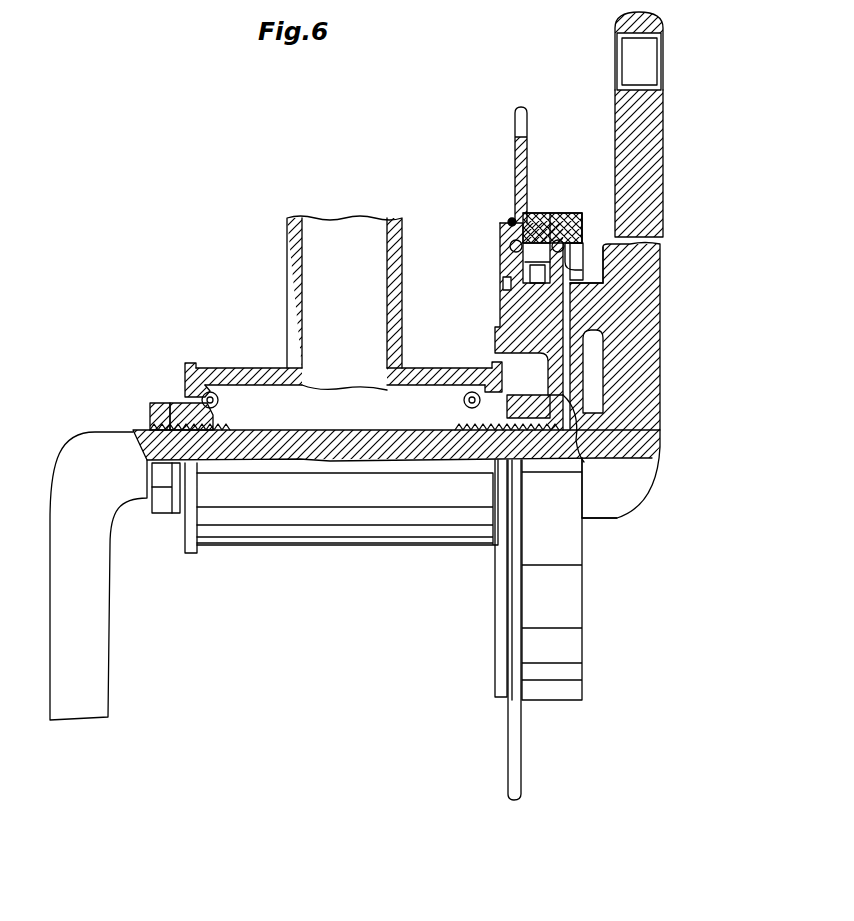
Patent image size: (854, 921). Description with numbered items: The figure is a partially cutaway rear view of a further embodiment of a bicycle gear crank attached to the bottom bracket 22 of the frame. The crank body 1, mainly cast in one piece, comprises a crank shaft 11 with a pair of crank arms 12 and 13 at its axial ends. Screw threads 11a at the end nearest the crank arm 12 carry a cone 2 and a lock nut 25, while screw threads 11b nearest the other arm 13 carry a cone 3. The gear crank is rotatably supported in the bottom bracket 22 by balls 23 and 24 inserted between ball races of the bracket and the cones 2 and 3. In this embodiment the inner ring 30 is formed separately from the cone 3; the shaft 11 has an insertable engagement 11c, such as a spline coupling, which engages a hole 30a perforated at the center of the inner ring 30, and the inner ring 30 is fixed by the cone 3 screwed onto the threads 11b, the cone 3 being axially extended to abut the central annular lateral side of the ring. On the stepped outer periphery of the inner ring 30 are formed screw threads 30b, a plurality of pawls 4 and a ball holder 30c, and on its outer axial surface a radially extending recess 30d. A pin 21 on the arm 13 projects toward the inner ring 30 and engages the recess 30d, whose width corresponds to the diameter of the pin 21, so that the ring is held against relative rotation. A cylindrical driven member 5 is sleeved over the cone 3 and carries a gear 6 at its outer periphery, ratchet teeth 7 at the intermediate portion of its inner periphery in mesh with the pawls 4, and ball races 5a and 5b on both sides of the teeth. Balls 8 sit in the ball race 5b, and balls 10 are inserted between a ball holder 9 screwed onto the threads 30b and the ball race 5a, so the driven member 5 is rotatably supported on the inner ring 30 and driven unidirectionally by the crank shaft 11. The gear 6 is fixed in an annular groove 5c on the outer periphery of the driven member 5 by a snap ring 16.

The crank body 1 is at (662, 388).
The cone 2 is at (188, 403).
The cone 3 is at (527, 400).
The pawls 4 is at (528, 275).
The cylindrical driven member 5 is at (592, 210).
The ball race 5a is at (508, 240).
The ball race 5b is at (572, 213).
The annular groove 5c is at (535, 213).
The gear 6 is at (527, 148).
The ratchet teeth 7 is at (568, 262).
The balls 8 is at (603, 212).
The ball holder 9 is at (506, 303).
The balls 10 is at (510, 258).
The crank shaft 11 is at (395, 452).
The screw threads 11a is at (208, 447).
The screw threads 11b is at (480, 433).
The insertable engagement 11c is at (563, 420).
The crank arm 12 is at (100, 633).
The crank arm 13 is at (647, 325).
The snap ring 16 is at (510, 220).
The pin 21 is at (582, 312).
The bottom bracket 22 is at (250, 367).
The balls 23 is at (210, 392).
The balls 24 is at (485, 390).
The lock nut 25 is at (157, 405).
The inner ring 30 is at (560, 418).
The hole 30a is at (577, 463).
The screw threads 30b is at (497, 330).
The ball holder 30c is at (612, 232).
The engageable recess 30d is at (578, 355).